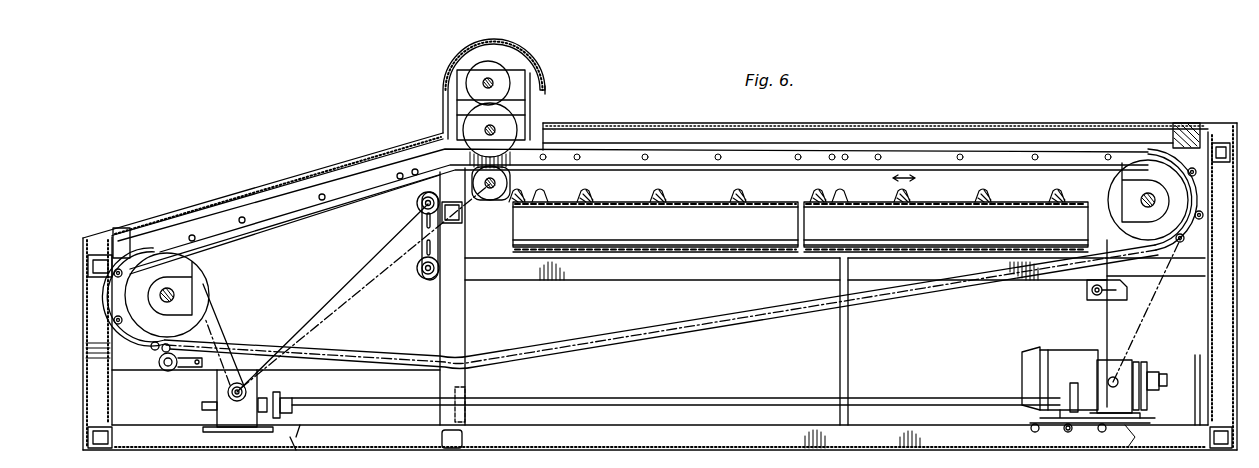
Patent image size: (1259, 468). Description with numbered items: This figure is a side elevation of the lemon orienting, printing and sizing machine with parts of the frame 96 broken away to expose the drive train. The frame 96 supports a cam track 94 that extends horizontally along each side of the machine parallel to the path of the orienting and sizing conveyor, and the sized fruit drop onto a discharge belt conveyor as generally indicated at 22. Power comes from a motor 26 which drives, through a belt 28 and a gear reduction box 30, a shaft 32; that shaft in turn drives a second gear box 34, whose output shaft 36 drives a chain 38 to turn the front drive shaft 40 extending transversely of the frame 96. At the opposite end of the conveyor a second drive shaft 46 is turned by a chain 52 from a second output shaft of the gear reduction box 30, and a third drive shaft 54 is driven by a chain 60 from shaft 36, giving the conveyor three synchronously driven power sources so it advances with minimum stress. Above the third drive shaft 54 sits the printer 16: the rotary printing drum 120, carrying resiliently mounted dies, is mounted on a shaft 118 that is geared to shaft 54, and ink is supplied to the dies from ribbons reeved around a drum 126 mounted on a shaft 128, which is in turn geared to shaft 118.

The printer 16 is at (436, 72).
The discharge belt conveyor 22 is at (701, 202).
The motor 26 is at (1022, 369).
The belt 28 is at (1153, 388).
The gear reduction box 30 is at (1118, 400).
The shaft 32 is at (893, 397).
The second gear box 34 is at (217, 394).
The shaft 36 is at (248, 390).
The chain 38 is at (220, 314).
The front drive shaft 40 is at (172, 294).
The second drive shaft 46 is at (1143, 198).
The chain 52 is at (1145, 330).
The third drive shaft 54 is at (490, 190).
The chain 60 is at (333, 298).
The cam track 94 is at (350, 182).
The frame 96 is at (156, 238).
The shaft 118 is at (484, 130).
The rotary printing drum 120 is at (514, 120).
The drum 126 is at (521, 82).
The shaft 128 is at (484, 84).